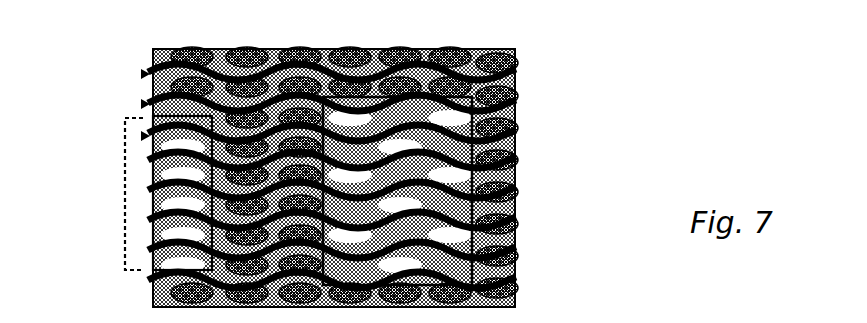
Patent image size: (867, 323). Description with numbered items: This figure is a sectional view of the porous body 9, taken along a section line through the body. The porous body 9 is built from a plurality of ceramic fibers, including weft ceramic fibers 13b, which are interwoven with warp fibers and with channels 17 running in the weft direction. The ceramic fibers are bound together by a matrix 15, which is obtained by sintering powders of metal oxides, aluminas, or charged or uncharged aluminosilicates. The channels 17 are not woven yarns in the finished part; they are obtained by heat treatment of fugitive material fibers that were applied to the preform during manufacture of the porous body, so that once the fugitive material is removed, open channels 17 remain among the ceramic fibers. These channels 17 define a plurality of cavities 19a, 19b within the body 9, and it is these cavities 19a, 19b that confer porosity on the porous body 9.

The porous body 9 is at (326, 165).
The matrix 15 is at (258, 63).
The weft ceramic fibers 13b is at (146, 136).
The channels 17 is at (150, 257).
The cavity 19a is at (125, 262).
The cavity 19b is at (515, 304).